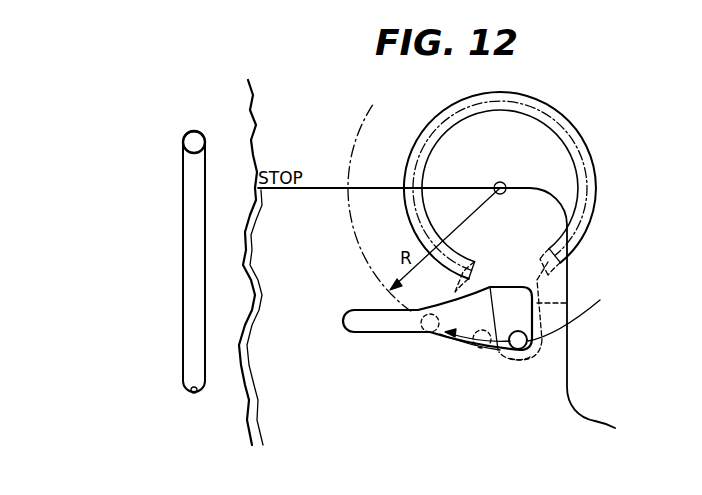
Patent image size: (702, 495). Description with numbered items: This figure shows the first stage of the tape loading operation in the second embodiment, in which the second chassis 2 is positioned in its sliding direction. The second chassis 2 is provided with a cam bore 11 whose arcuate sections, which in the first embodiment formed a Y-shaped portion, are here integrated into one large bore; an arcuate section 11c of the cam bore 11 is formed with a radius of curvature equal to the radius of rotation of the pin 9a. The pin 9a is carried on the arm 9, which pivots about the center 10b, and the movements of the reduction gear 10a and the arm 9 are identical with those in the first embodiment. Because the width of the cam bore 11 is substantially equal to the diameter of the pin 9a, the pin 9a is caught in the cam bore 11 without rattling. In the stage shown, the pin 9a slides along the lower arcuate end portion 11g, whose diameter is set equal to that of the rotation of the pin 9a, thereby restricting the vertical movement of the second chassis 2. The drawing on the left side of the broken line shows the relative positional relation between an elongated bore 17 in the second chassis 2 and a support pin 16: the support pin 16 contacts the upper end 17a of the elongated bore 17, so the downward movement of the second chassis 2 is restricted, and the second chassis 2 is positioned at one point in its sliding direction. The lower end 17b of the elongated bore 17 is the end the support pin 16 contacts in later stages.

The second chassis 2 is at (244, 118).
The arm 9 is at (568, 303).
The pin 9a is at (540, 357).
The reduction gear 10a is at (588, 150).
The center 10b is at (499, 182).
The cam bore 11 is at (343, 322).
The arcuate section 11c is at (511, 351).
The lower arcuate end portion 11g is at (443, 343).
The support pin 16 is at (185, 141).
The elongated bore 17 is at (187, 319).
The upper end 17a is at (194, 131).
The lower end 17b is at (194, 394).